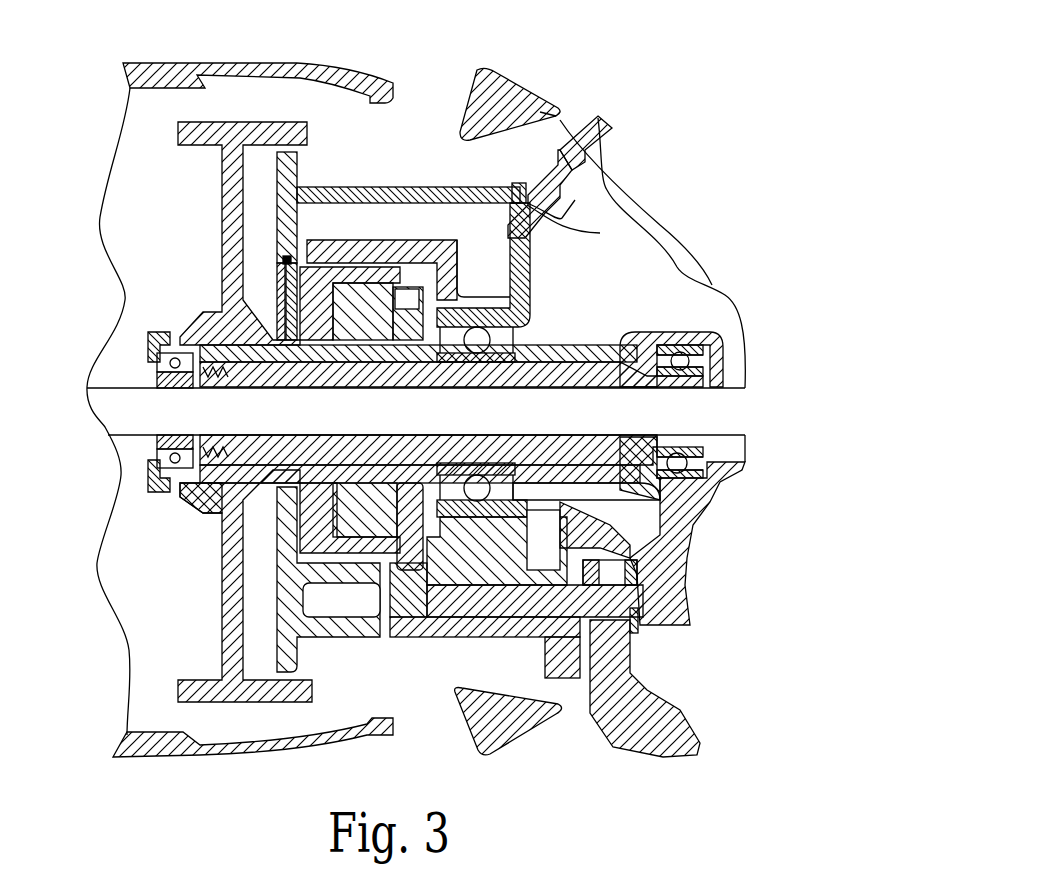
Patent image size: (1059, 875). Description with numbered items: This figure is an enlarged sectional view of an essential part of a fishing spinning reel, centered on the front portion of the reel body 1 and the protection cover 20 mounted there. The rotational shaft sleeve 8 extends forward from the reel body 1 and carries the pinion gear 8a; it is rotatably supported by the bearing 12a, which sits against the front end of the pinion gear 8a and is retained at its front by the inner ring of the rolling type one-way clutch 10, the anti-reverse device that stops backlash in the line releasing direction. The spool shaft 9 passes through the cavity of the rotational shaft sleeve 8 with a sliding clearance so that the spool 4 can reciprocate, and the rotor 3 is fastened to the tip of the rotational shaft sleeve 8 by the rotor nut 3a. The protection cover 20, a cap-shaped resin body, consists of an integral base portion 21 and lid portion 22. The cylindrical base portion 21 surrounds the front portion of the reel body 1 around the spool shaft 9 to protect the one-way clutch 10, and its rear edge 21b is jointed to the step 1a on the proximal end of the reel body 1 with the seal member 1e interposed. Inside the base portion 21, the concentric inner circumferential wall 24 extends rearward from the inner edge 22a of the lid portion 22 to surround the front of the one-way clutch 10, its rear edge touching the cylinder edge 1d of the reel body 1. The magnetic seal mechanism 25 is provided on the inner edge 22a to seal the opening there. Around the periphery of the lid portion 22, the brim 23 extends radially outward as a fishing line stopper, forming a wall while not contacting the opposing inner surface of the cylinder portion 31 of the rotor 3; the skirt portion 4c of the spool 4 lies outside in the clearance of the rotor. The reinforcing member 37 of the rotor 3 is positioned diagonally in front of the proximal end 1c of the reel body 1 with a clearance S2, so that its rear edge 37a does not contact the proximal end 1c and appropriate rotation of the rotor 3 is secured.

The reel body 1 is at (667, 597).
The step 1a is at (586, 106).
The proximal end 1c is at (605, 131).
The cylinder edge 1d is at (460, 220).
The seal member 1e is at (540, 228).
The rotor 3 is at (218, 193).
The rotor nut 3a is at (212, 480).
The spool 4 is at (253, 737).
The skirt portion 4c is at (340, 72).
The rotational shaft sleeve 8 is at (695, 332).
The pinion gear 8a is at (595, 338).
The spool shaft 9 is at (705, 412).
The one-way clutch 10 is at (357, 515).
The bearing 12a is at (477, 327).
The protection cover 20 is at (265, 255).
The base portion 21 is at (394, 187).
The rear edge 21b is at (578, 192).
The lid portion 22 is at (268, 232).
The inner edge 22a is at (280, 262).
The brim 23 is at (290, 150).
The inner circumferential wall 24 is at (333, 240).
The magnetic seal mechanism 25 is at (262, 550).
The cylinder portion 31 is at (222, 625).
The reinforcing member 37 is at (484, 70).
The rear edge 37a is at (522, 192).
The clearance S2 is at (590, 103).